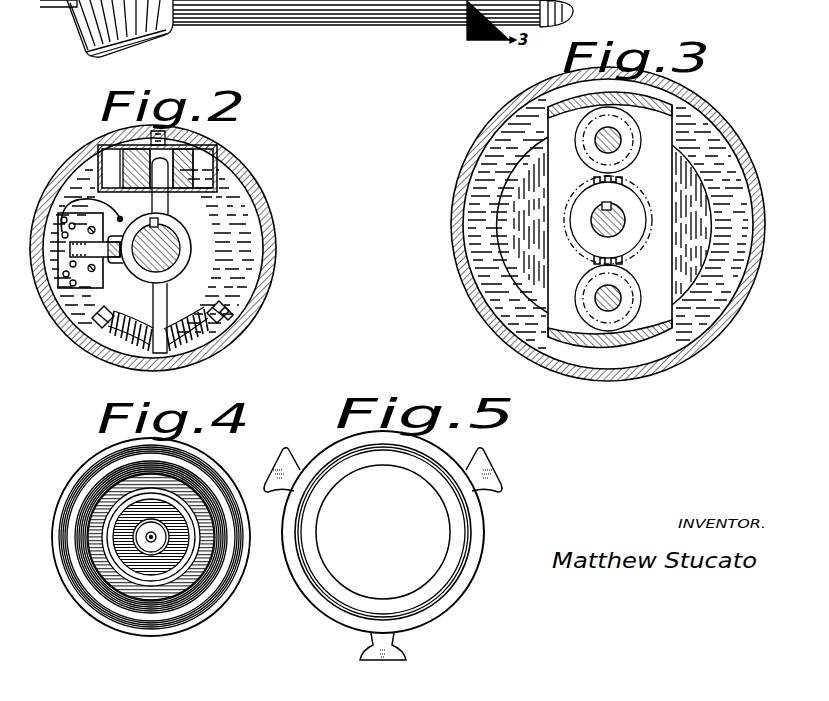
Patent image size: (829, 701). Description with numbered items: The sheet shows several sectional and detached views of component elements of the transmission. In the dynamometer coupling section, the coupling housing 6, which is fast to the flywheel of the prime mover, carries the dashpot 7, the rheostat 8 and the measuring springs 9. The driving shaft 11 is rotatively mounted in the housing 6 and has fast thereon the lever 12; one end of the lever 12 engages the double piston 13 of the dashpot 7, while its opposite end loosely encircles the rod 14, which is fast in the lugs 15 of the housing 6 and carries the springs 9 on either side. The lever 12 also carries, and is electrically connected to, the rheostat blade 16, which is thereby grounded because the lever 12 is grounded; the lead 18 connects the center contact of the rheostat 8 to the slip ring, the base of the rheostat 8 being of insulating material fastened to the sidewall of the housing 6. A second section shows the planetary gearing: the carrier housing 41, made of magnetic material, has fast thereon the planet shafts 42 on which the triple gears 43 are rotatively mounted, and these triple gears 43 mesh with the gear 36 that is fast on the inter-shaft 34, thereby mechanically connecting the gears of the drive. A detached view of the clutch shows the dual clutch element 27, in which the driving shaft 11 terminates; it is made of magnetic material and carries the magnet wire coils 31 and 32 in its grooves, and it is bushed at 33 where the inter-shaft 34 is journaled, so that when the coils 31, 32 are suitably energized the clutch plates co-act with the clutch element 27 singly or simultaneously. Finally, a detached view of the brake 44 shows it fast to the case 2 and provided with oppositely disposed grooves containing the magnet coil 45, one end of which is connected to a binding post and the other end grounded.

In FIG. 3, the case 2 is at (523, 98).
In FIG. 2, the dynamometer coupling housing 6 is at (70, 165).
In FIG. 2, the dashpot 7 is at (92, 160).
In FIG. 2, the rheostat 8 is at (62, 216).
In FIG. 2, the measuring springs 9 is at (195, 316).
In FIG. 2, the driving shaft 11 is at (165, 234).
In FIG. 2, the lever 12 is at (188, 252).
In FIG. 2, the double piston 13 is at (188, 157).
In FIG. 2, the rod 14 is at (229, 318).
In FIG. 2, the lugs 15 is at (218, 313).
In FIG. 2, the rheostat blade 16 is at (95, 250).
In FIG. 2, the lead 18 is at (59, 226).
In FIG. 4, the dual clutch element 27 is at (90, 466).
In FIG. 4, the magnet wire coil 31 is at (113, 506).
In FIG. 4, the magnet wire coil 32 is at (70, 507).
In FIG. 4, the bushing 33 is at (140, 537).
In FIG. 3, the inter-shaft 34 is at (615, 214).
In FIG. 3, the gear 36 is at (611, 230).
In FIG. 3, the carrier housing 41 is at (662, 108).
In FIG. 3, the planet shafts 42 is at (603, 143).
In FIG. 3, the triple gears 43 is at (643, 270).
In FIG. 5, the brake 44 is at (482, 512).
In FIG. 5, the magnet coil 45 is at (424, 462).